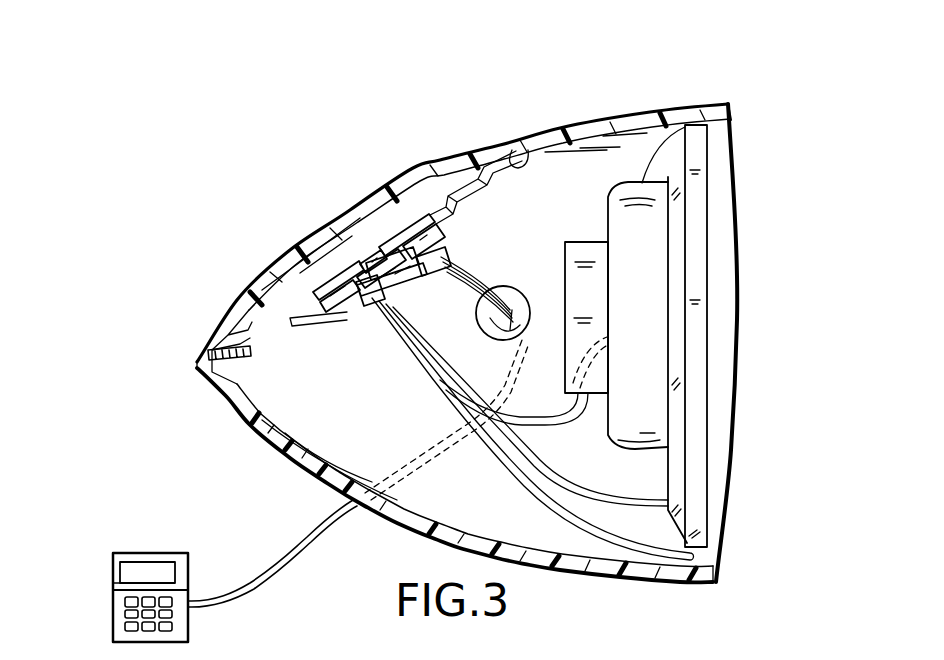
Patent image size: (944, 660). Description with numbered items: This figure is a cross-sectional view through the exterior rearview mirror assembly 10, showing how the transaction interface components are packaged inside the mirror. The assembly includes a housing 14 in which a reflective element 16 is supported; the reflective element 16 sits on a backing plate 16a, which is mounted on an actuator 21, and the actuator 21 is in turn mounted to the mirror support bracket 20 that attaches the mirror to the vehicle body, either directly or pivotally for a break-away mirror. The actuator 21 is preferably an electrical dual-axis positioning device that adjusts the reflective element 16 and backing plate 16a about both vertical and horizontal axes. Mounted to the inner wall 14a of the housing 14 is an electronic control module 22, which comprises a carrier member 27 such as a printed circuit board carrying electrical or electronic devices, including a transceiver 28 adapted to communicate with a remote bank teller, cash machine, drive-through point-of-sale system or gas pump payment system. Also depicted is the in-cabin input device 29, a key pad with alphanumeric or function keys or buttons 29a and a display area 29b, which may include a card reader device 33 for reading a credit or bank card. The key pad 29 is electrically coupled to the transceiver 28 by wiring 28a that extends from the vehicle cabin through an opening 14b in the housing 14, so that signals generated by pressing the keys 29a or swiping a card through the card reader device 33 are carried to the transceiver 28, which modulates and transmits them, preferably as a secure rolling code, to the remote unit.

The exterior rearview mirror assembly 10 is at (603, 83).
The housing 14 is at (627, 116).
The inner wall 14a is at (510, 160).
The opening 14b is at (504, 287).
The reflective element 16 is at (700, 200).
The backing plate 16a is at (683, 270).
The mirror support bracket 20 is at (580, 240).
The actuator 21 is at (687, 110).
The electronic control module 22 is at (287, 350).
The carrier member 27 is at (457, 180).
The transceiver 28 is at (380, 260).
The wiring 28a is at (250, 586).
The input device 29 is at (168, 553).
The keys or buttons 29a is at (167, 627).
The display area 29b is at (135, 570).
The card reader device 33 is at (115, 585).